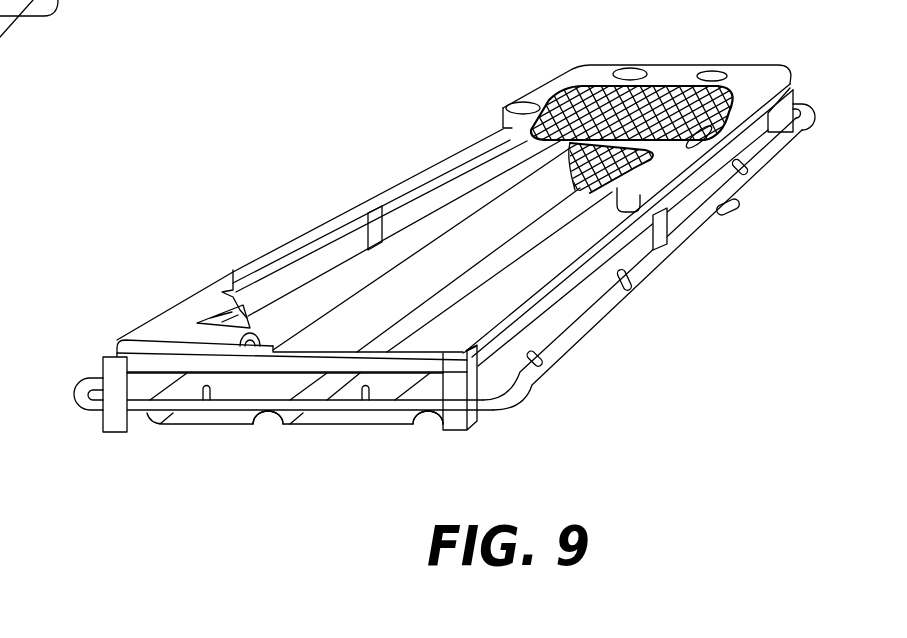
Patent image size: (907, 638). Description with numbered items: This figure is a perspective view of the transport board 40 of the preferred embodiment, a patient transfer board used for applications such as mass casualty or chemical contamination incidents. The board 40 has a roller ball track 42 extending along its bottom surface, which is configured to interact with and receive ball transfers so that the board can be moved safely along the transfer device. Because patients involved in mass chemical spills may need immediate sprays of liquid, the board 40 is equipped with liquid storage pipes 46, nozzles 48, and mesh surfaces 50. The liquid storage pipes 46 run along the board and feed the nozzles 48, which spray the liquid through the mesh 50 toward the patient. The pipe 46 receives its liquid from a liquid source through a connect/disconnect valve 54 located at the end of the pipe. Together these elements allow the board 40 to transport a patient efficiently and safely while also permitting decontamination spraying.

The transport board 40 is at (687, 298).
The roller ball track 42 is at (427, 425).
The liquid storage pipes 46 is at (200, 407).
The nozzles 48 is at (622, 283).
The mesh surfaces 50 is at (630, 136).
The connect/disconnect valve 54 is at (747, 207).